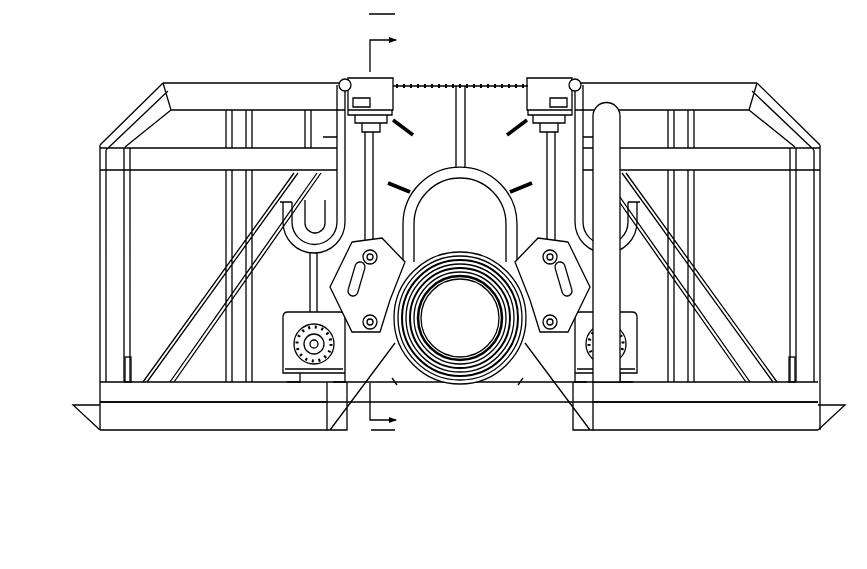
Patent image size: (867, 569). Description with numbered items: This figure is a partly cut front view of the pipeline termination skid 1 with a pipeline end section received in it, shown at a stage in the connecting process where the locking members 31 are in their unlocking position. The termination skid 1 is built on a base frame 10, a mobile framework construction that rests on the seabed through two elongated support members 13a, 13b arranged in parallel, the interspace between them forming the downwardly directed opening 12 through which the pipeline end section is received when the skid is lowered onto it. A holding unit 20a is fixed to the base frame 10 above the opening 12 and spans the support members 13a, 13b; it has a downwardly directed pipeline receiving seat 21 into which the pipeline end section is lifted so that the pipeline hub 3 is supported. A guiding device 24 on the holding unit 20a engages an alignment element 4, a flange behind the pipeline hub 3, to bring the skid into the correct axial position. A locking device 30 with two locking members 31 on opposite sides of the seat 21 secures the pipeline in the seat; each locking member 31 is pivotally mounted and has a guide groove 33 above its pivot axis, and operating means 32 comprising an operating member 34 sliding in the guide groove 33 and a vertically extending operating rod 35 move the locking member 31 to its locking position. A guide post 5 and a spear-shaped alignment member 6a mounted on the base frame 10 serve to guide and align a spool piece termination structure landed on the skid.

The pipeline termination skid 1 is at (676, 44).
The pipeline hub 3 is at (468, 395).
The alignment element 4 is at (443, 395).
The guide post 5 is at (606, 131).
The alignment member 6a is at (313, 348).
The base frame 10 is at (622, 450).
The opening 12 is at (346, 426).
The support member 13a is at (205, 426).
The support member 13b is at (702, 426).
The holding unit 20a is at (484, 86).
The pipeline receiving seat 21 is at (445, 170).
The guiding device 24 is at (513, 265).
The locking device 30 is at (580, 262).
The locking member 31 is at (462, 320).
The operating means 32 is at (355, 66).
The guide groove 33 is at (352, 285).
The operating member 34 is at (377, 256).
The operating rod 35 is at (373, 156).